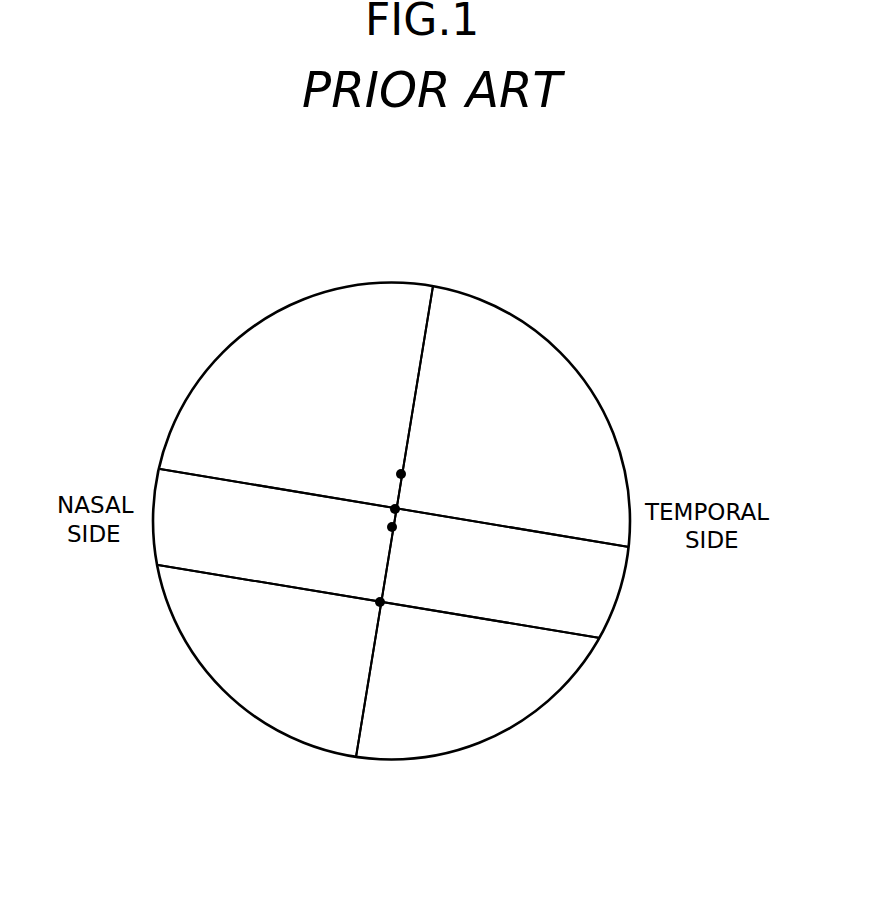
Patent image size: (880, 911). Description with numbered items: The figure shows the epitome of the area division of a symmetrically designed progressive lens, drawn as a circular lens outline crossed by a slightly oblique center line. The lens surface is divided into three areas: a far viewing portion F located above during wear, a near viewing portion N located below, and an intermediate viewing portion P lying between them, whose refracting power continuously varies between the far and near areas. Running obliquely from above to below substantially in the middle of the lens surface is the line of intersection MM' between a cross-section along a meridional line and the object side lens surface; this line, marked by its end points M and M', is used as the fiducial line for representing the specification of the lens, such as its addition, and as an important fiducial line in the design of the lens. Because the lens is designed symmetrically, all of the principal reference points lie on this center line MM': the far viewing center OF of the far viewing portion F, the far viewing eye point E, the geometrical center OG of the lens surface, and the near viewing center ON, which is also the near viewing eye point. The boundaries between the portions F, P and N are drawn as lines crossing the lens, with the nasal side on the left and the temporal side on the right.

The meridional fiducial line end point M is at (401, 508).
The meridional fiducial line end point M' is at (388, 539).
The far viewing portion F is at (394, 508).
The intermediate viewing portion P is at (393, 553).
The near viewing portion N is at (379, 622).
The far viewing center OF is at (420, 475).
The far viewing eye point E is at (405, 500).
The geometrical center OG is at (413, 530).
The near viewing center ON is at (397, 617).